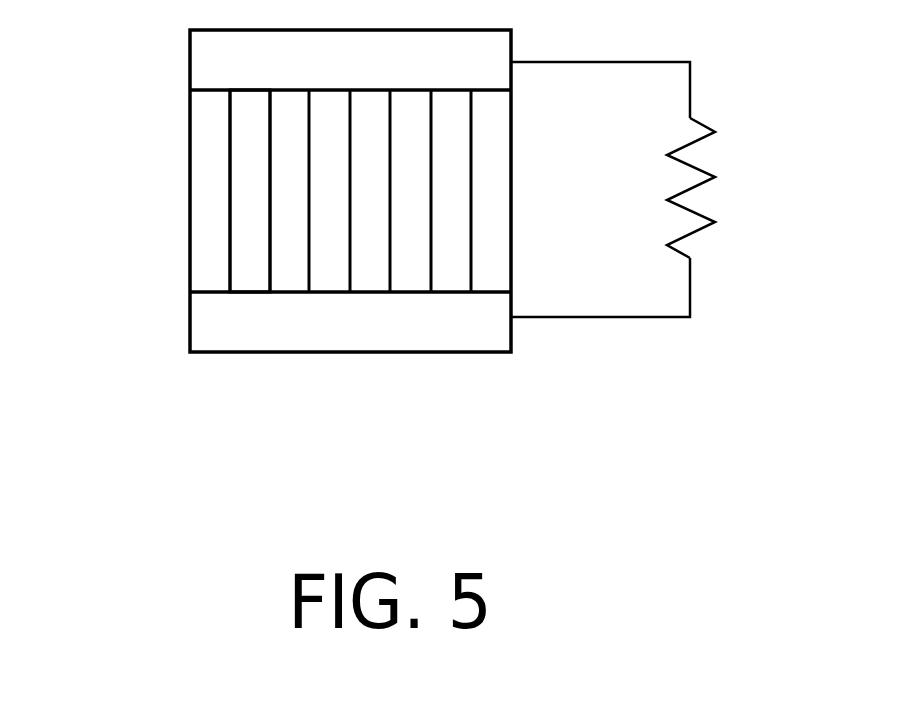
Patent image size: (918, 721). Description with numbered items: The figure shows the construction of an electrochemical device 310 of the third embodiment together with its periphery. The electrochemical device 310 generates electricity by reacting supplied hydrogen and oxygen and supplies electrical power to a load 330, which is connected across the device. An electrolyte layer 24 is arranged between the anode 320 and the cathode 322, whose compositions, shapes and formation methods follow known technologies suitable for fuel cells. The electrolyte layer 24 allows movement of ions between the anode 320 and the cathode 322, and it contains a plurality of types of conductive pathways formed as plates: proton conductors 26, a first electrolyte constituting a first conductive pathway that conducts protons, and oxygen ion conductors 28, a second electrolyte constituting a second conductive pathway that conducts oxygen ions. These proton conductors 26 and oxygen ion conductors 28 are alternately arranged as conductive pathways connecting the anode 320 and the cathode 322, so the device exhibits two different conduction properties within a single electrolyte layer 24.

The electrochemical device 310 is at (185, 362).
The anode 320 is at (212, 63).
The cathode 322 is at (213, 325).
The proton conductors 26 is at (212, 157).
The oxygen ion conductors 28 is at (250, 238).
The electrolyte layer 24 is at (512, 137).
The load 330 is at (697, 120).